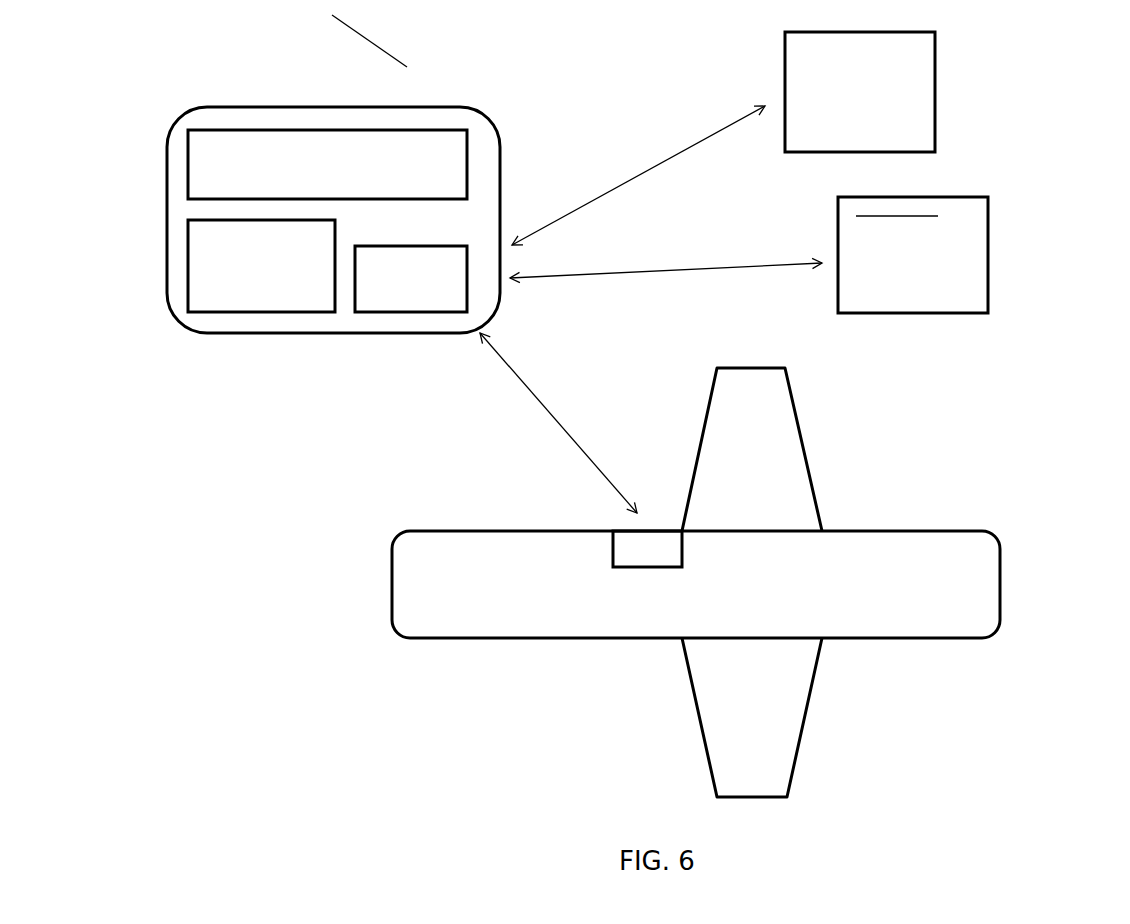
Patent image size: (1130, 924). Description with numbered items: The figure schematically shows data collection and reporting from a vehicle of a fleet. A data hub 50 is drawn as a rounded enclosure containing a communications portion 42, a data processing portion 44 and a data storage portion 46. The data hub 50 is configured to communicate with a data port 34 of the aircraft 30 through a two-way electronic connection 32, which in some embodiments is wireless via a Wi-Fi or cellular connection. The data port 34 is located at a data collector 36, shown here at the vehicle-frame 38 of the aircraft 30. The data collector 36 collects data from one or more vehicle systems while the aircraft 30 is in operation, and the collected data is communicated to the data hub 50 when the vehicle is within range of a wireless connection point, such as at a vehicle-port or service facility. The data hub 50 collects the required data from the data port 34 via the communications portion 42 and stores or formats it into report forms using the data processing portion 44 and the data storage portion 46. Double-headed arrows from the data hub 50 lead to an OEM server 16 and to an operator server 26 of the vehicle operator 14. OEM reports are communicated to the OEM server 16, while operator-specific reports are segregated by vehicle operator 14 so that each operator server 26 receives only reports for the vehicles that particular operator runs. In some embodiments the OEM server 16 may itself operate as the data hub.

The vehicle operator 14 is at (990, 255).
The OEM server 16 is at (937, 98).
The operator server 26 is at (333, 181).
The aircraft 30 is at (609, 582).
The two-way electronic connection 32 is at (573, 433).
The data port 34 is at (613, 531).
The data collector 36 is at (668, 548).
The vehicle-frame 38 is at (860, 583).
The communications portion 42 is at (382, 288).
The data processing portion 44 is at (217, 282).
The data storage portion 46 is at (287, 173).
The data hub 50 is at (389, 41).